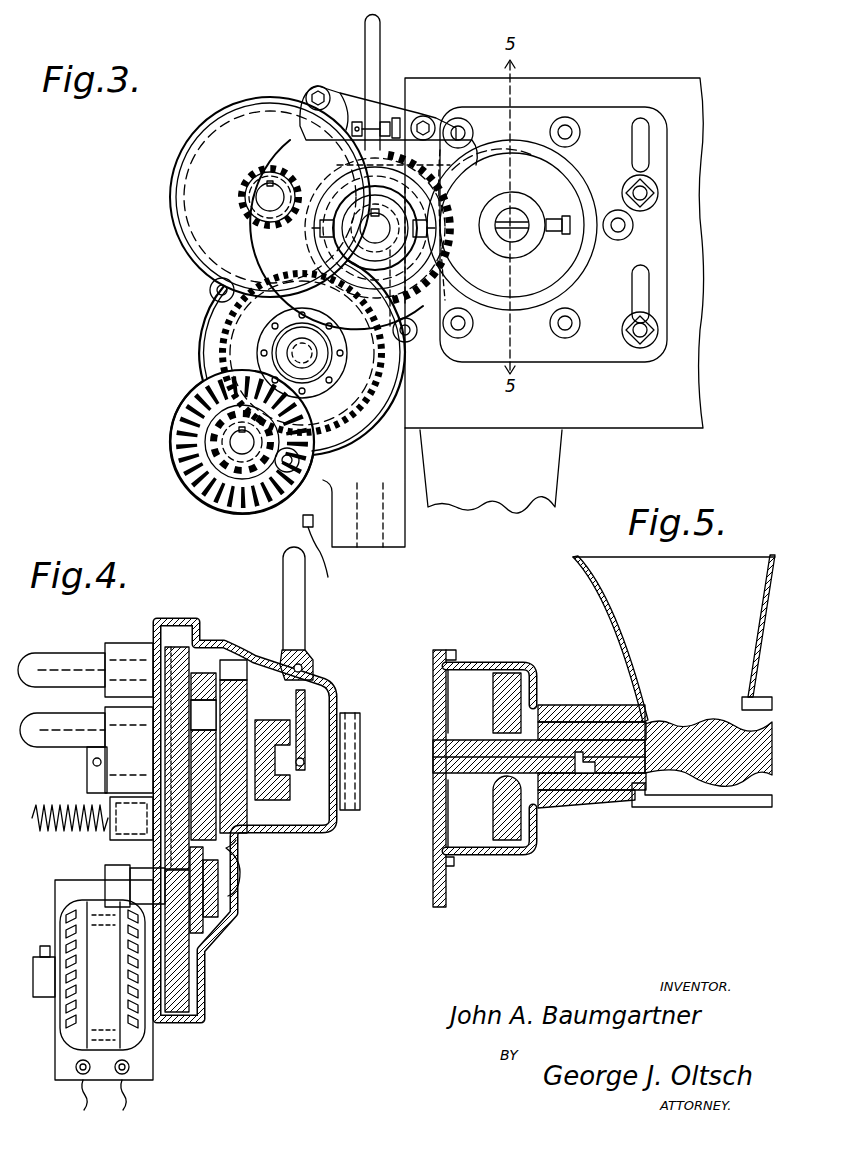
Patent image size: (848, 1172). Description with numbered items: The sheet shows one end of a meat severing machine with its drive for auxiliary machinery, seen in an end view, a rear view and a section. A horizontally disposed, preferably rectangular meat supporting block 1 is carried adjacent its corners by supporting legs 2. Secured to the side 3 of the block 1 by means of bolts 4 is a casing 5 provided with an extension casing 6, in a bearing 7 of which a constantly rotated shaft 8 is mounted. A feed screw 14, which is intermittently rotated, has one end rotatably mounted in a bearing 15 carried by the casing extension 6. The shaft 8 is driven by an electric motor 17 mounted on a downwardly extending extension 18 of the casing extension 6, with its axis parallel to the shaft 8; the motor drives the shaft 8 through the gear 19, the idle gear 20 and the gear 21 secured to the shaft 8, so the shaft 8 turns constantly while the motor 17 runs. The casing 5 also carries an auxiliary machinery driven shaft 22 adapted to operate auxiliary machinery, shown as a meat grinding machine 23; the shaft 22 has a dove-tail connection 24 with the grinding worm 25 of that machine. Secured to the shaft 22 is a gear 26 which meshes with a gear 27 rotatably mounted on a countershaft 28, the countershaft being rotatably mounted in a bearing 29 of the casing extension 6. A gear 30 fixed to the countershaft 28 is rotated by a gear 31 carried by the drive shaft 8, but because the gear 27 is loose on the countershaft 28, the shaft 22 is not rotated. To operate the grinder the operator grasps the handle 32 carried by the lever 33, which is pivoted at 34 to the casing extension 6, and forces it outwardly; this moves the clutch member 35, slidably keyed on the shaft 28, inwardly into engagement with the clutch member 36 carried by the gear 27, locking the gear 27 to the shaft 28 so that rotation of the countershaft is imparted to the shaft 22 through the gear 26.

In FIG. 3, the meat supporting block 1 is at (703, 388).
In FIG. 3, the supporting legs 2 is at (491, 471).
In FIG. 3, the side of the block 3 is at (558, 257).
In FIG. 3, the bolts 4 is at (663, 198).
In FIG. 3, the casing 5 is at (528, 131).
In FIG. 5, the casing 5 is at (510, 857).
In FIG. 3, the extension casing 6 is at (217, 302).
In FIG. 4, the extension casing 6 is at (227, 918).
In FIG. 4, the bearing 7 is at (120, 717).
In FIG. 3, the constantly rotated shaft 8 is at (253, 195).
In FIG. 4, the constantly rotated shaft 8 is at (47, 746).
In FIG. 3, the feed screw 14 is at (330, 287).
In FIG. 4, the feed screw 14 is at (50, 833).
In FIG. 4, the bearing 15 is at (120, 828).
In FIG. 3, the electric motor 17 is at (173, 447).
In FIG. 4, the electric motor 17 is at (102, 1027).
In FIG. 3, the downwardly extending extension 18 is at (400, 518).
In FIG. 3, the gear 19 is at (230, 420).
In FIG. 4, the gear 19 is at (55, 657).
In FIG. 3, the idle gear 20 is at (225, 381).
In FIG. 4, the idle gear 20 is at (167, 903).
In FIG. 3, the gear 21 is at (213, 268).
In FIG. 4, the gear 21 is at (177, 647).
In FIG. 3, the auxiliary machinery driven shaft 22 is at (518, 236).
In FIG. 5, the auxiliary machinery driven shaft 22 is at (463, 745).
In FIG. 5, the meat grinding machine 23 is at (674, 638).
In FIG. 5, the dove-tail connection 24 is at (588, 775).
In FIG. 5, the grinding worm 25 is at (700, 723).
In FIG. 3, the gear 26 is at (455, 184).
In FIG. 4, the gear 26 is at (237, 687).
In FIG. 5, the gear 26 is at (503, 666).
In FIG. 3, the gear 27 is at (460, 333).
In FIG. 4, the gear 27 is at (255, 840).
In FIG. 3, the countershaft 28 is at (372, 243).
In FIG. 4, the countershaft 28 is at (323, 763).
In FIG. 4, the bearing 29 is at (130, 778).
In FIG. 4, the gear 30 is at (207, 687).
In FIG. 3, the gear 31 is at (262, 220).
In FIG. 4, the gear 31 is at (200, 710).
In FIG. 3, the handle 32 is at (381, 47).
In FIG. 4, the handle 32 is at (297, 603).
In FIG. 3, the lever 33 is at (383, 72).
In FIG. 4, the lever 33 is at (297, 640).
In FIG. 3, the pivot 34 is at (396, 124).
In FIG. 4, the pivot 34 is at (303, 668).
In FIG. 3, the clutch member 35 is at (383, 263).
In FIG. 4, the clutch member 35 is at (333, 810).
In FIG. 3, the clutch member 36 is at (300, 240).
In FIG. 4, the clutch member 36 is at (303, 817).